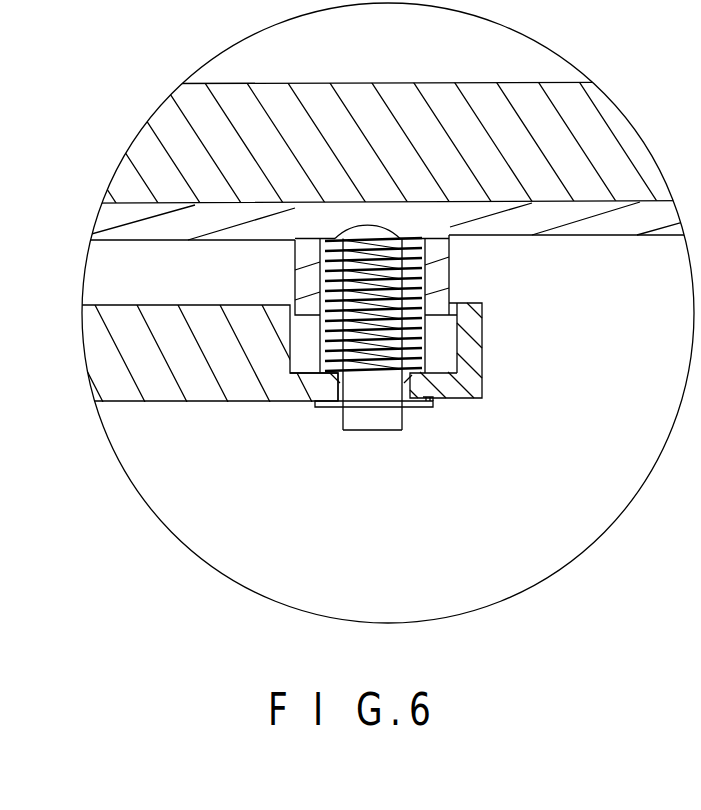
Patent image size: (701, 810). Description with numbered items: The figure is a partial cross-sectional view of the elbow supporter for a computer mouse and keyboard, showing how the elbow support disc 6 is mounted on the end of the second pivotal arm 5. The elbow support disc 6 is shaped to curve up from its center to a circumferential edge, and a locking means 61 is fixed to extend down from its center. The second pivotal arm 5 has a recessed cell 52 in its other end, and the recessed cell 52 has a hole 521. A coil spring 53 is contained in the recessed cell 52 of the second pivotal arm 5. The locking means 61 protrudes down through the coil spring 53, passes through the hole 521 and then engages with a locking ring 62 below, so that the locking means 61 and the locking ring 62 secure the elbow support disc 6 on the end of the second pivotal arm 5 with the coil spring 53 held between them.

The elbow support disc 6 is at (431, 118).
The second pivotal arm 5 is at (165, 392).
The recessed cell 52 is at (443, 340).
The hole 521 is at (432, 402).
The coil spring 53 is at (330, 338).
The locking means 61 is at (363, 422).
The locking ring 62 is at (413, 408).